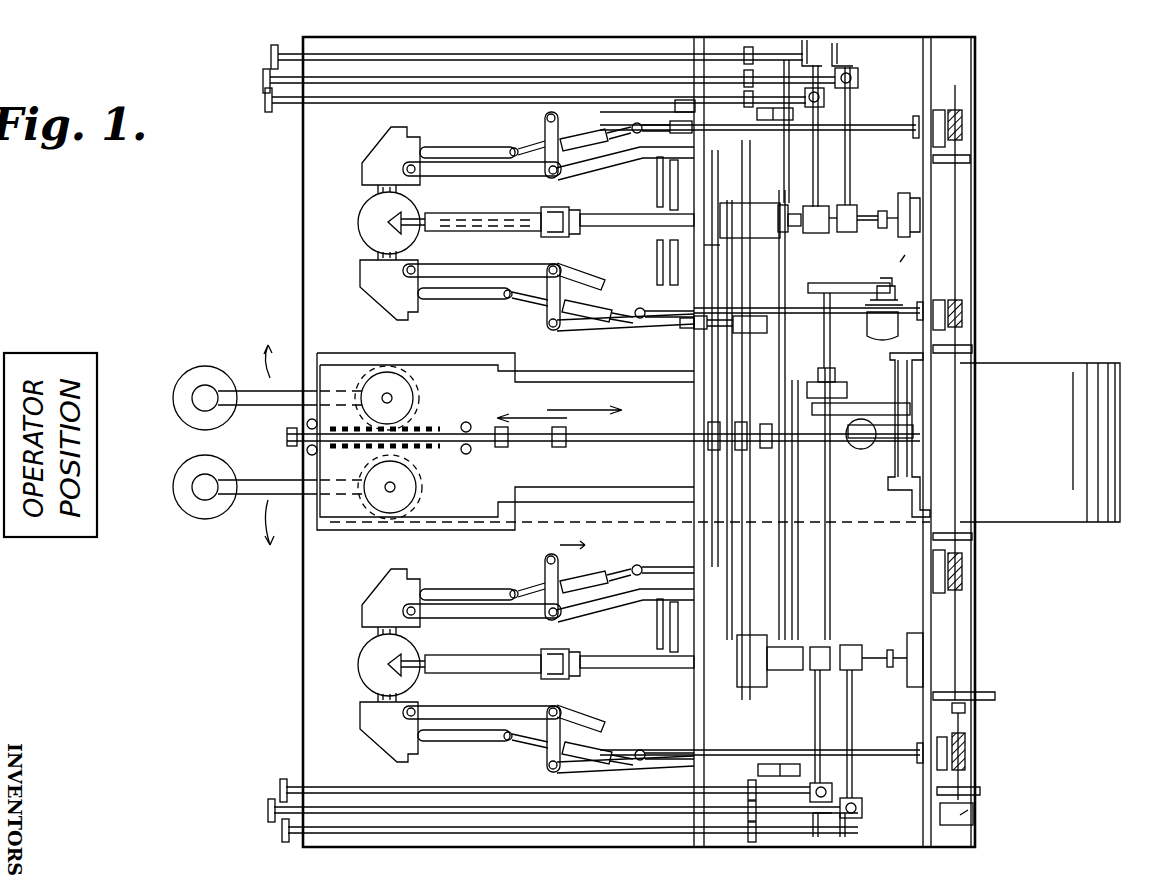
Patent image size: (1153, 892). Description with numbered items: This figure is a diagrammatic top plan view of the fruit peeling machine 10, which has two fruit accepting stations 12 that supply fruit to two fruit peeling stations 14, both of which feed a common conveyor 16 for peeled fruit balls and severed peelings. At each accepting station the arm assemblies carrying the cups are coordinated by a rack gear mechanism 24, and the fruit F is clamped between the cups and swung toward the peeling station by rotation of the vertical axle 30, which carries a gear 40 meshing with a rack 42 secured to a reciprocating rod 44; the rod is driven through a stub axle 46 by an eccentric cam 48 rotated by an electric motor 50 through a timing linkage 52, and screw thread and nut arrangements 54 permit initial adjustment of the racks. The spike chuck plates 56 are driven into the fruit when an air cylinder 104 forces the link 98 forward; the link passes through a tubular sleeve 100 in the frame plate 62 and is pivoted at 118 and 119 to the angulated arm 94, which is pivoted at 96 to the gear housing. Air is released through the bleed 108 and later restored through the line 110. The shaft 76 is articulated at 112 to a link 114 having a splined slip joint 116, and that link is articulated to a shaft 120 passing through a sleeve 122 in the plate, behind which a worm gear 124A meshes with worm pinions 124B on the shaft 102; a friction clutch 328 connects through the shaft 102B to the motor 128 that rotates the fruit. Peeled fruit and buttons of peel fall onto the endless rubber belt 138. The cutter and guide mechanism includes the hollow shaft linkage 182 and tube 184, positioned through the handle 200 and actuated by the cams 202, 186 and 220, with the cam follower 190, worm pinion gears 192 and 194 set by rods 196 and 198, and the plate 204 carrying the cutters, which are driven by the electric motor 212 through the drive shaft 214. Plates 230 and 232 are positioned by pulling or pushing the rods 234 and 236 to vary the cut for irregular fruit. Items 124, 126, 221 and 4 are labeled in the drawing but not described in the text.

The fruit peeling machine 10 is at (1064, 191).
The fruit accepting station 12 is at (170, 374).
The fruit peeling station 14 is at (336, 211).
The common conveyor 16 is at (1045, 525).
The rack gear mechanism 24 is at (282, 436).
The vertical axle 30 is at (392, 396).
The gear 40 is at (420, 398).
The rack 42 is at (470, 462).
The rod 44 is at (606, 448).
The stub axle 46 is at (895, 468).
The eccentric cam 48 is at (848, 392).
The electric motor 50 is at (870, 338).
The timing linkage 52 is at (838, 282).
The screw thread and nut arrangements 54 is at (535, 448).
The plate 56 is at (400, 190).
The plate 62 is at (704, 172).
The shaft 76 is at (448, 145).
The angulated arm 94 is at (470, 186).
The pivot 96 is at (420, 148).
The link 98 is at (605, 98).
The tubular sleeve 100 is at (682, 98).
The shaft 102 is at (960, 210).
The shaft 102B is at (965, 775).
The air cylinder 104 is at (752, 334).
The bleed 108 is at (758, 318).
The line 110 is at (742, 318).
The articulation 112 is at (508, 148).
The link 114 is at (540, 135).
The splined slip joint 116 is at (556, 172).
The pivot 118 is at (636, 135).
The pivot 119 is at (590, 282).
The shaft 120 is at (780, 128).
The sleeve 122 is at (705, 132).
The bearing block 124 is at (962, 308).
The worm gear 124A is at (962, 120).
The worm pinion 124B is at (962, 136).
The cylinder 126 is at (612, 300).
The motor 128 is at (975, 812).
The endless rubber belt 138 is at (1032, 483).
The hollow shaft linkage 182 is at (840, 232).
The tube 184 is at (795, 212).
The cam 186 is at (830, 445).
The cam follower 190 is at (808, 286).
The worm pinion gear 192 is at (866, 232).
The worm pinion gear 194 is at (815, 233).
The rod 196 is at (850, 166).
The rod 198 is at (818, 160).
The handle 200 is at (272, 47).
The cam 202 is at (728, 455).
The plate 204 is at (612, 140).
The electric motor 212 is at (906, 266).
The drive shaft 214 is at (900, 208).
The cam 220 is at (760, 470).
The plate 221 is at (733, 212).
The plate 230 is at (858, 75).
The plate 232 is at (824, 102).
The rod 234 is at (262, 86).
The rod 236 is at (262, 104).
The friction clutch 328 is at (997, 700).
The part 4 is at (906, 246).
The fruit F is at (358, 230).